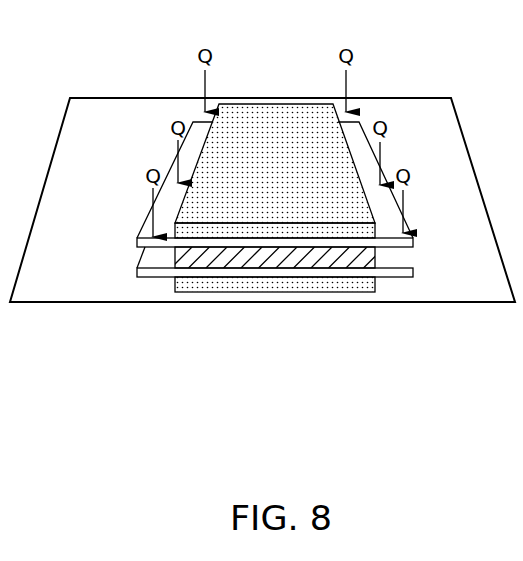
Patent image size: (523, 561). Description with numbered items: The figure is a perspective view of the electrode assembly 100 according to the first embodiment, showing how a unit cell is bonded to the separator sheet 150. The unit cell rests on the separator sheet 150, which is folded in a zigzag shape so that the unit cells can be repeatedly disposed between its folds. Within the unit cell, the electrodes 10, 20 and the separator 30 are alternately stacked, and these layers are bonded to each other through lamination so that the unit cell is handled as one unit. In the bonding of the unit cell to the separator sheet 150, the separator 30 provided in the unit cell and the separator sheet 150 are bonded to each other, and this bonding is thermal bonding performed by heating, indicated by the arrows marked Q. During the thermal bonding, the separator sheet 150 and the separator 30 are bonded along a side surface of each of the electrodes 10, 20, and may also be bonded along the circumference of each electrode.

The electrode assembly 100 is at (57, 54).
The separator sheet 150 is at (427, 108).
The separator 30 is at (165, 202).
The electrode 10 is at (207, 287).
The electrode 20 is at (268, 258).